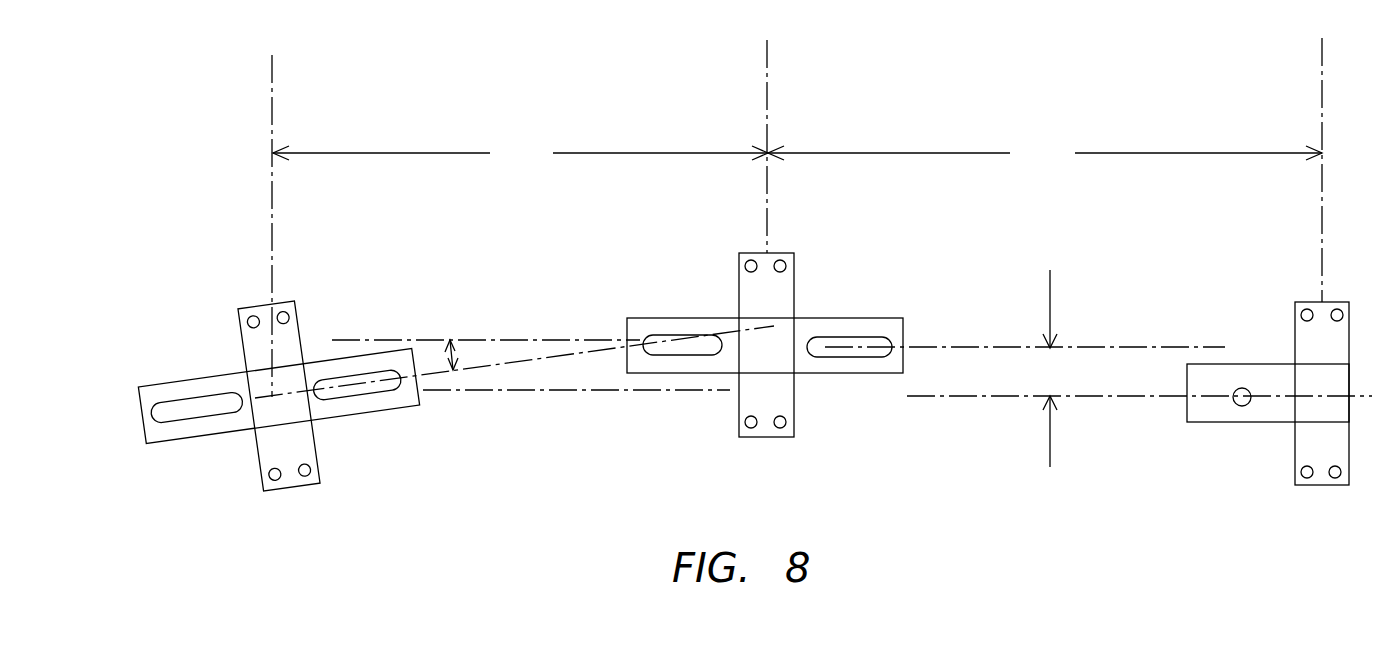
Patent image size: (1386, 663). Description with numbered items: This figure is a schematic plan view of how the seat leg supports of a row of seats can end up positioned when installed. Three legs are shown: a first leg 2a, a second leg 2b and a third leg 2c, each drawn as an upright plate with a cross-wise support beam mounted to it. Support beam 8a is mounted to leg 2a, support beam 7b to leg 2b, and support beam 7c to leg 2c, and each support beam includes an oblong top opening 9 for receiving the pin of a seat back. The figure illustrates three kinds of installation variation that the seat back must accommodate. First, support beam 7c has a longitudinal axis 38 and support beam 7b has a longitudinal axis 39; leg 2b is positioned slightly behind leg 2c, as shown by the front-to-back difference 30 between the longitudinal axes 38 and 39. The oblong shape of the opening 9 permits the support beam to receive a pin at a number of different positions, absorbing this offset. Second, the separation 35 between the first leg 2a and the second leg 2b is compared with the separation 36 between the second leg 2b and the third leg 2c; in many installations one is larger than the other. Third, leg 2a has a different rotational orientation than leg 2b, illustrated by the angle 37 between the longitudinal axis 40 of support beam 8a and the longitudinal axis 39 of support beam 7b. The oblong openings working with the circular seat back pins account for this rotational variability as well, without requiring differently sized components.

The leg 2a is at (300, 442).
The leg 2b is at (757, 398).
The leg 2c is at (1317, 438).
The support beam 8a is at (368, 403).
The support beam 7b is at (697, 362).
The support beam 7c is at (1255, 410).
The opening 9 is at (815, 355).
The difference 30 is at (1052, 370).
The separation 35 is at (520, 157).
The separation 36 is at (1045, 158).
The angle 37 is at (452, 353).
The longitudinal axis 38 is at (1113, 400).
The longitudinal axis 39 is at (1000, 348).
The longitudinal axis 40 is at (563, 358).